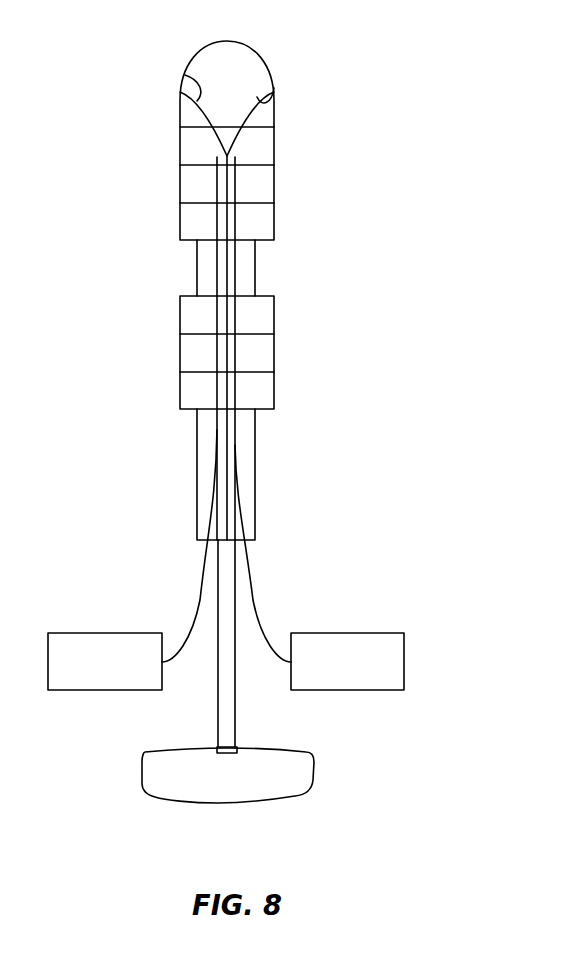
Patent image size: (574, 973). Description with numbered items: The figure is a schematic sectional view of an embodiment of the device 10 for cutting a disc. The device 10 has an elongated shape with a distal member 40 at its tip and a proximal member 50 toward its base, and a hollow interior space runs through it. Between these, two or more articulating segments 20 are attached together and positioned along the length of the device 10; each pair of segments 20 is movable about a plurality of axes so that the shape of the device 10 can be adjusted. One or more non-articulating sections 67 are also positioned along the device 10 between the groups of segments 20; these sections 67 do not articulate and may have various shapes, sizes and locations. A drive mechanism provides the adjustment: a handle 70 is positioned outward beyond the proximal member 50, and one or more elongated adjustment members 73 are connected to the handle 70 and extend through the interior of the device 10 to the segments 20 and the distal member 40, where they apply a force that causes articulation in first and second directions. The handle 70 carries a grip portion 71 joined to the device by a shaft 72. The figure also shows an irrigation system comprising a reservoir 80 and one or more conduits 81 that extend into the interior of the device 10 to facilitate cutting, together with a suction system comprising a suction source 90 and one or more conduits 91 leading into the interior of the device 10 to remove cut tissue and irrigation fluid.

The device 10 is at (436, 335).
The articulating segments 20 is at (274, 220).
The distal member 40 is at (247, 72).
The proximal member 50 is at (245, 462).
The non-articulating sections 67 is at (244, 274).
The handle 70 is at (220, 782).
The handle grip portion 71 is at (153, 773).
The handle shaft 72 is at (228, 698).
The elongated adjustment members 73 is at (199, 90).
The reservoir 80 is at (105, 661).
The conduits 81 is at (198, 607).
The suction source 90 is at (347, 661).
The conduits 91 is at (259, 615).